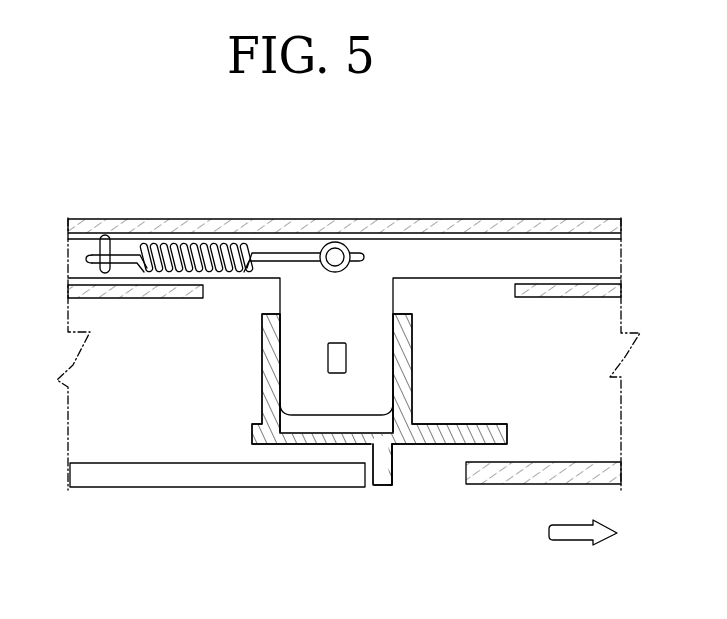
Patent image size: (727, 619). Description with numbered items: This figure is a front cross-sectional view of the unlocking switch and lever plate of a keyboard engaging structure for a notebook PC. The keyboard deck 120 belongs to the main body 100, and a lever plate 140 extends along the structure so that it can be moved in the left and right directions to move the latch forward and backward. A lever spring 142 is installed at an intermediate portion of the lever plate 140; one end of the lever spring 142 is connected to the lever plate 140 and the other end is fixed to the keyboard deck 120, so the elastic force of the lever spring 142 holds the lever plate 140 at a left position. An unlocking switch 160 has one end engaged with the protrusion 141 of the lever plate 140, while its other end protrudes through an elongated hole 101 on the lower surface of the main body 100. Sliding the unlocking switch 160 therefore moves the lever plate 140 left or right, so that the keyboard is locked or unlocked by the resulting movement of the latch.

The main body 100 is at (185, 475).
The elongated hole 101 is at (437, 468).
The keyboard deck 120 is at (392, 228).
The lever plate 140 is at (501, 247).
The protrusion 141 is at (382, 361).
The lever spring 142 is at (183, 237).
The unlocking switch 160 is at (407, 428).